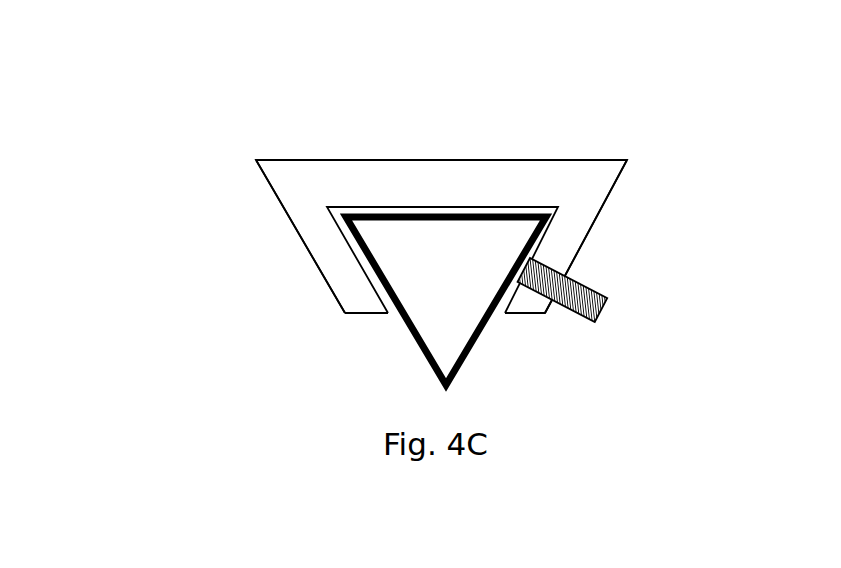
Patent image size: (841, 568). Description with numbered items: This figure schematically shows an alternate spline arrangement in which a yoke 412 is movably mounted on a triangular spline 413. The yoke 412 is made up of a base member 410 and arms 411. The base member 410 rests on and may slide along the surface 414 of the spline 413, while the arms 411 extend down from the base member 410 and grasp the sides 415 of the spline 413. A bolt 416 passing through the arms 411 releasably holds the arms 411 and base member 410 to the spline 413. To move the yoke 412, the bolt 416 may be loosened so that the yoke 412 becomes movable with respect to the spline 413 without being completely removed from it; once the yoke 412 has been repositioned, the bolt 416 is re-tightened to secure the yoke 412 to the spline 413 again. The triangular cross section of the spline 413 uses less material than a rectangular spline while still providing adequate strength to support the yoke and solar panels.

The base member 410 is at (278, 143).
The arms 411 is at (278, 221).
The yoke 412 is at (608, 132).
The triangular spline 413 is at (455, 275).
The surface 414 is at (448, 208).
The sides 415 is at (399, 332).
The bolt 416 is at (603, 315).